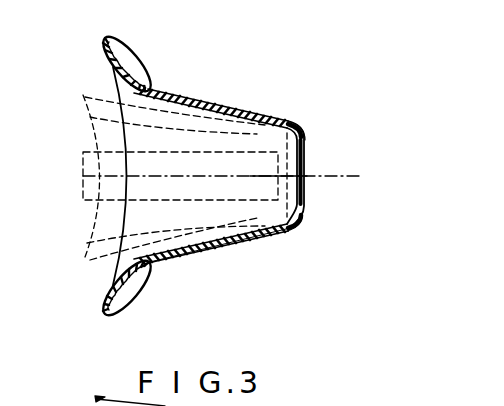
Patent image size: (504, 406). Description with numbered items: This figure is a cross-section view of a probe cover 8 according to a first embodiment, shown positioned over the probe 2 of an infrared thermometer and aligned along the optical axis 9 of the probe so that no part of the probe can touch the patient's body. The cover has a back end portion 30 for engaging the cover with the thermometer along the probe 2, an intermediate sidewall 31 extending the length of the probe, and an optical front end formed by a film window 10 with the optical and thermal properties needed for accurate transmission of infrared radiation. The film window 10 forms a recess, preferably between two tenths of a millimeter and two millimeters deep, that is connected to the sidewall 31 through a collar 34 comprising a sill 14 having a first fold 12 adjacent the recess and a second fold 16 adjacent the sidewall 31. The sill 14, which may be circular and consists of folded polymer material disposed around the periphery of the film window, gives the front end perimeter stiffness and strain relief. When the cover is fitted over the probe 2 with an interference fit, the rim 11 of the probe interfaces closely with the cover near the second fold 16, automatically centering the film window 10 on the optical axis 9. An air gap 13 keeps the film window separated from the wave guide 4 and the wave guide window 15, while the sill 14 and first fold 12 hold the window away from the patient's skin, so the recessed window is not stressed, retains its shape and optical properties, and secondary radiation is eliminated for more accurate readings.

The probe 2 is at (166, 258).
The wave guide 4 is at (92, 160).
The probe cover 8 is at (213, 251).
The optical axis 9 is at (83, 176).
The film window 10 is at (306, 190).
The rim 11 is at (262, 112).
The first fold 12 is at (305, 141).
The air gap 13 is at (291, 229).
The sill 14 is at (309, 125).
The wave guide window 15 is at (246, 106).
The second fold 16 is at (276, 118).
The back end portion 30 is at (127, 288).
The intermediate sidewall 31 is at (191, 98).
The collar 34 is at (318, 113).